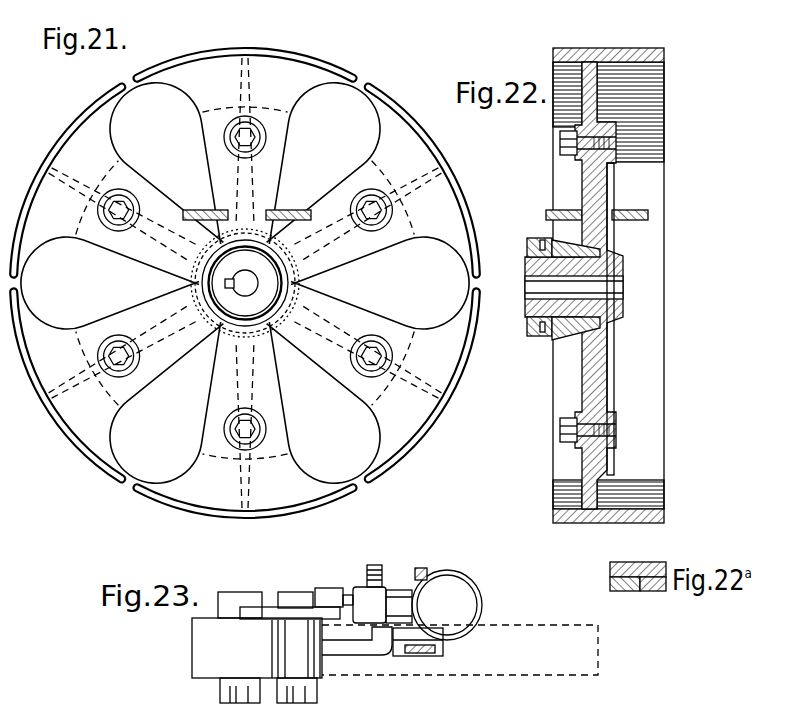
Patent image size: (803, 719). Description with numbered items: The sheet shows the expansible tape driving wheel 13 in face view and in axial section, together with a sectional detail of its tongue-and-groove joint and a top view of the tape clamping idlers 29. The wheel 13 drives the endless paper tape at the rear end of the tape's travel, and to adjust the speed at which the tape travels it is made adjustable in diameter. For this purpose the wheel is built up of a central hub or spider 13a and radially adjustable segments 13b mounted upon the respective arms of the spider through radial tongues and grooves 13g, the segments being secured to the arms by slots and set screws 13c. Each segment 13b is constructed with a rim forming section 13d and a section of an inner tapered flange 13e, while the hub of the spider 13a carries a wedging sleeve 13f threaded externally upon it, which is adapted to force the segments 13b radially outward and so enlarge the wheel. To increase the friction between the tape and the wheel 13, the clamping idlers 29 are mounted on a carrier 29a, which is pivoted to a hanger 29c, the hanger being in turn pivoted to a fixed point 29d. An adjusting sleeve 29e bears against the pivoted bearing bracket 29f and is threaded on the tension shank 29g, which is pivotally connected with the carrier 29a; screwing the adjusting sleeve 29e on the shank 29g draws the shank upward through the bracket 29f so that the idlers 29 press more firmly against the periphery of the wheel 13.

In FIG. 21, the driving wheel 13 is at (245, 283).
In FIG. 22, the driving wheel 13 is at (605, 285).
In FIG. 23, the driving wheel 13 is at (532, 625).
In FIG. 21, the central hub or spider 13a is at (212, 283).
In FIG. 22, the central hub or spider 13a is at (624, 268).
In FIG. 21, the radially adjustable segments 13b is at (283, 136).
In FIG. 22, the radially adjustable segments 13b is at (586, 184).
In FIG. 22A, the radially adjustable segments 13b is at (622, 562).
In FIG. 21, the set screws 13c is at (252, 143).
In FIG. 22, the set screws 13c is at (562, 143).
In FIG. 22, the rim forming section 13d is at (605, 55).
In FIG. 21, the inner tapered flange section 13e is at (272, 240).
In FIG. 22, the inner tapered flange section 13e is at (548, 236).
In FIG. 21, the wedging sleeve 13f is at (262, 284).
In FIG. 22, the wedging sleeve 13f is at (552, 334).
In FIG. 22, the radial tongues and grooves 13g is at (614, 184).
In FIG. 22A, the radial tongues and grooves 13g is at (648, 591).
In FIG. 23, the clamping idlers 29 is at (208, 655).
In FIG. 23, the carrier 29a is at (270, 610).
In FIG. 23, the hanger 29c is at (386, 656).
In FIG. 23, the fixed point 29d is at (433, 655).
In FIG. 23, the adjusting sleeve 29e is at (407, 590).
In FIG. 23, the pivoted bearing bracket 29f is at (360, 590).
In FIG. 23, the tension shank 29g is at (332, 590).